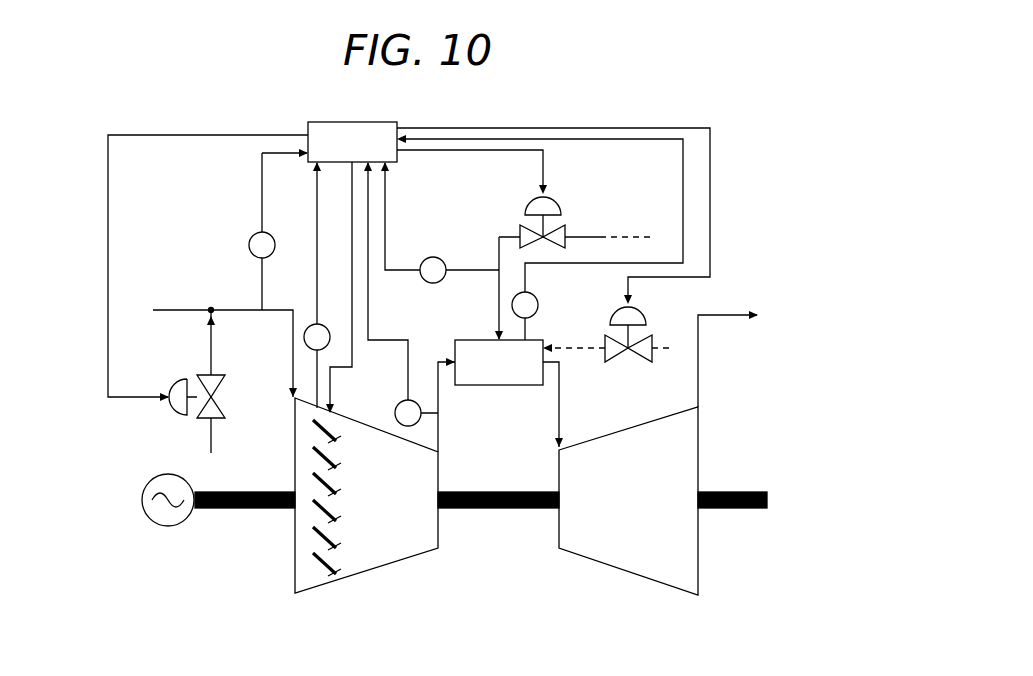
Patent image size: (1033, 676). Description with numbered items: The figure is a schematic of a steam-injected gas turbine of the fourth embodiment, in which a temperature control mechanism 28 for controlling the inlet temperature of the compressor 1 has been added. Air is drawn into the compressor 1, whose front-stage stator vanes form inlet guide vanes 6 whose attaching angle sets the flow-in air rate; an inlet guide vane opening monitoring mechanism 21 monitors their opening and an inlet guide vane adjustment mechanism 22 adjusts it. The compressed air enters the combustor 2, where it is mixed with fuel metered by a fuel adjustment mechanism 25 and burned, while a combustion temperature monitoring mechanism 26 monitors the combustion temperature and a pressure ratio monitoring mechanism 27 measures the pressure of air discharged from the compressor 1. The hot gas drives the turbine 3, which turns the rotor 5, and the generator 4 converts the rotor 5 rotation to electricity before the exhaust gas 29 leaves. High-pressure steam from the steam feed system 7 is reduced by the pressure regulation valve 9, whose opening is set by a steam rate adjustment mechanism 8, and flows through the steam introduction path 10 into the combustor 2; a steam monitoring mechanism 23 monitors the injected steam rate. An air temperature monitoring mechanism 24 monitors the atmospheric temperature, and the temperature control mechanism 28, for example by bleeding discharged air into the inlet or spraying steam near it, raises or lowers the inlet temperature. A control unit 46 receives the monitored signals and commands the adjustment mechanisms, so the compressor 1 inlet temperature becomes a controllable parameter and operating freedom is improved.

The compressor 1 is at (392, 548).
The combustor 2 is at (545, 340).
The turbine 3 is at (604, 556).
The generator 4 is at (165, 527).
The rotor 5 is at (500, 510).
The inlet guide vanes 6 is at (317, 562).
The steam feed system 7 is at (616, 237).
The steam rate adjustment mechanism 8 is at (547, 168).
The pressure regulation valve 9 is at (570, 226).
The steam introduction path 10 is at (498, 303).
The inlet guide vane opening monitoring mechanism 21 is at (307, 320).
The inlet guide vane adjustment mechanism 22 is at (335, 383).
The steam monitoring mechanism 23 is at (437, 256).
The air temperature monitoring mechanism 24 is at (252, 233).
The fuel adjustment mechanism 25 is at (637, 310).
The combustion temperature monitoring mechanism 26 is at (537, 292).
The pressure ratio monitoring mechanism 27 is at (394, 413).
The temperature control mechanism 28 is at (210, 344).
The exhaust gas 29 is at (723, 313).
The control unit 46 is at (343, 153).